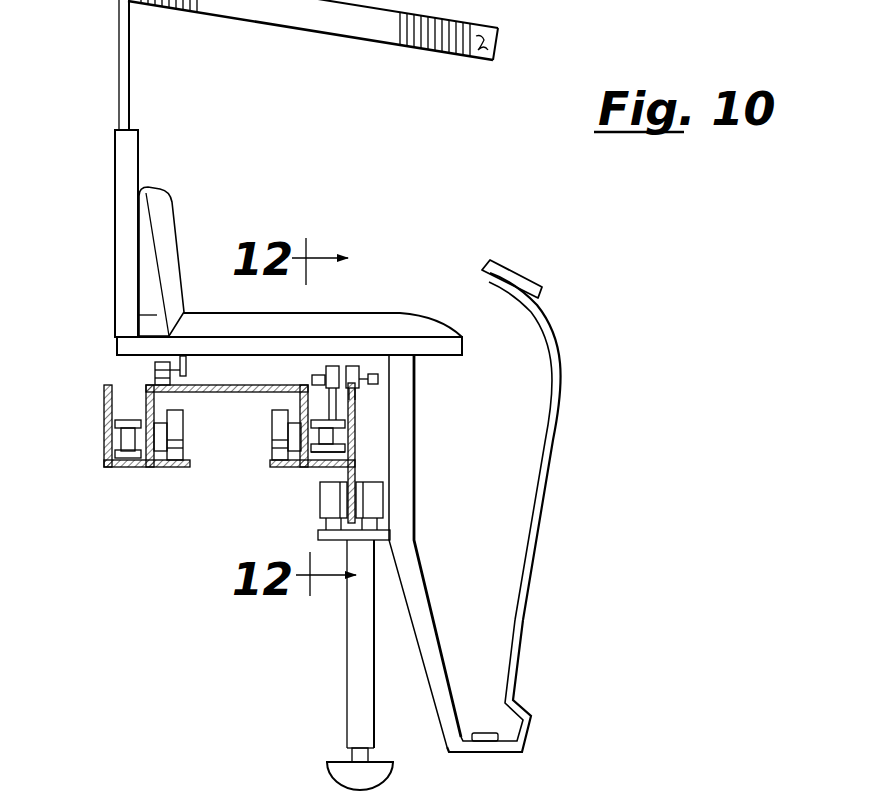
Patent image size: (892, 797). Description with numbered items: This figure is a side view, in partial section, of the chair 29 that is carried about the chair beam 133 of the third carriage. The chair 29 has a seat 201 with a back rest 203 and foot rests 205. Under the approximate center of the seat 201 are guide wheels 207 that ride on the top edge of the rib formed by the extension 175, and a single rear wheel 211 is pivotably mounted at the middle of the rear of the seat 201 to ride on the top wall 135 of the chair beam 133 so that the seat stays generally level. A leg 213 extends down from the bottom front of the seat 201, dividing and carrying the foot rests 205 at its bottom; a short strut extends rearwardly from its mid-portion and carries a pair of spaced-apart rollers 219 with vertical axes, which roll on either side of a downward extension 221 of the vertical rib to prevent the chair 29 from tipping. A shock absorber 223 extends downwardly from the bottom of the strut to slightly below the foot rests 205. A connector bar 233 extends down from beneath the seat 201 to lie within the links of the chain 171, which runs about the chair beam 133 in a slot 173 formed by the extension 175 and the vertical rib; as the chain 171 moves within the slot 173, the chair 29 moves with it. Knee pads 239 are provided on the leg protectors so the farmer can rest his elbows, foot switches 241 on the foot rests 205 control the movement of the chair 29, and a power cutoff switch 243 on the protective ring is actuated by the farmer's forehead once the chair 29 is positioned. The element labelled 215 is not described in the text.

The chair 29 is at (480, 150).
The chair beam 133 is at (246, 400).
The top wall 135 is at (218, 385).
The chain loop 171 is at (268, 456).
The slot 173 is at (306, 372).
The extension 175 is at (357, 443).
The seat 201 is at (408, 313).
The back rest 203 is at (171, 216).
The foot rests 205 is at (520, 735).
The guide wheels 207 is at (357, 400).
The rear wheel 211 is at (155, 370).
The leg 213 is at (414, 474).
The plate 215 is at (365, 552).
The rollers 219 is at (320, 500).
The downward extension 221 is at (348, 473).
The shock absorber 223 is at (345, 653).
The connector bar 233 is at (357, 412).
The knee pads 239 is at (520, 272).
The foot switches 241 is at (482, 733).
The power cutoff switch 243 is at (469, 58).